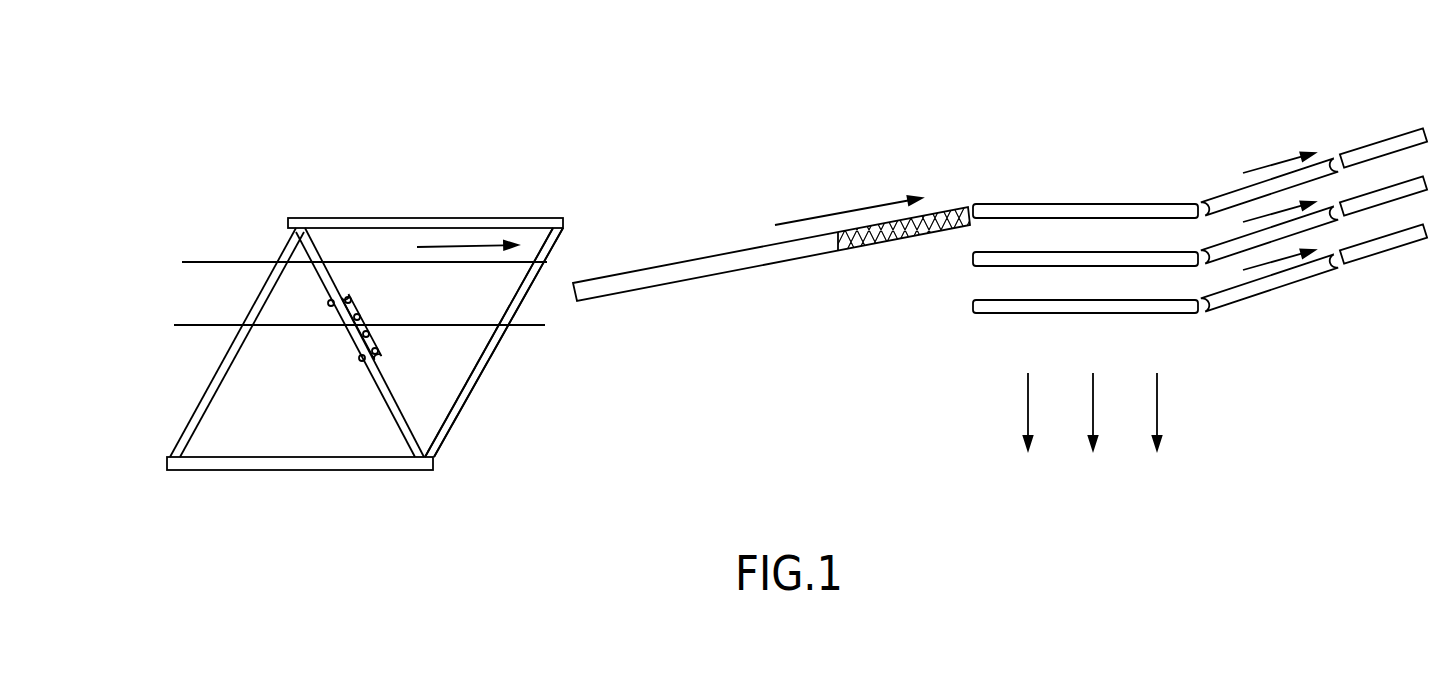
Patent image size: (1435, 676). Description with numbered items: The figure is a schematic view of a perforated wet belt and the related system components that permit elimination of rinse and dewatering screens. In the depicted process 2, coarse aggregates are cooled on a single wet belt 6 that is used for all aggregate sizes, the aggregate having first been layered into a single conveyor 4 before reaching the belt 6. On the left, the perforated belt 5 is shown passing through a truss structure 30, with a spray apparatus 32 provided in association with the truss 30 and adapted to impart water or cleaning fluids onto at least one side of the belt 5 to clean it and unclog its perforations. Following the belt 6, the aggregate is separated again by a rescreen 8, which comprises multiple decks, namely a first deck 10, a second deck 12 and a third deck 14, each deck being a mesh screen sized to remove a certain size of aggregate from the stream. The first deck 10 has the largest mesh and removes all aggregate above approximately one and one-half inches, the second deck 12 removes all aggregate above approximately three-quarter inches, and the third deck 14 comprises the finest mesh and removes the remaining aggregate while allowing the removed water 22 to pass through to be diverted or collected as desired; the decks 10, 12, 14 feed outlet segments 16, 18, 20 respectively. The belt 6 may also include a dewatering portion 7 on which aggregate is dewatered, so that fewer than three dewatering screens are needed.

The process 2 is at (636, 98).
The conveyor 4 is at (361, 496).
The perforated belt 5 is at (228, 262).
The wet belt 6 is at (722, 278).
The dewatering portion 7 is at (940, 209).
The rescreen 8 is at (963, 301).
The first deck 10 is at (1015, 203).
The second deck 12 is at (973, 260).
The third deck 14 is at (1057, 314).
The first end segment 16 is at (1338, 166).
The second end segment 18 is at (1337, 210).
The third end segment 20 is at (1318, 281).
The removed water 22 is at (1188, 365).
The truss structure 30 is at (450, 417).
The spray apparatus 32 is at (373, 340).